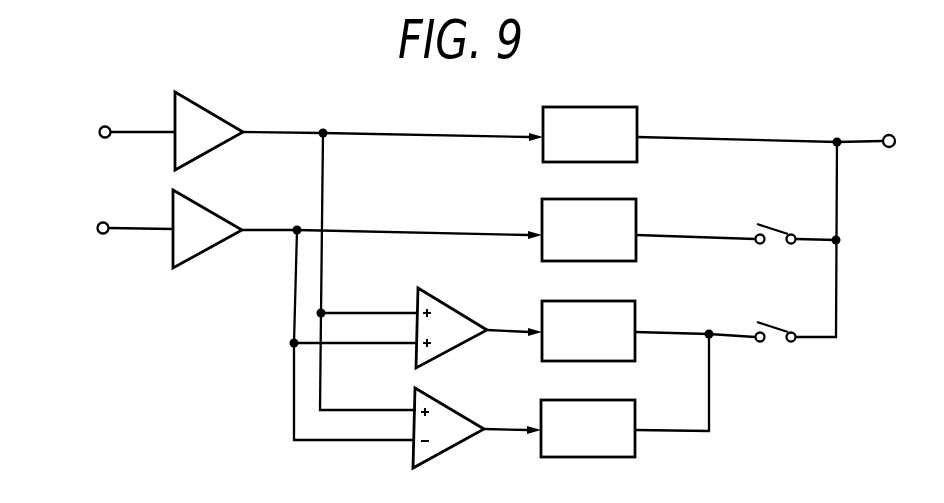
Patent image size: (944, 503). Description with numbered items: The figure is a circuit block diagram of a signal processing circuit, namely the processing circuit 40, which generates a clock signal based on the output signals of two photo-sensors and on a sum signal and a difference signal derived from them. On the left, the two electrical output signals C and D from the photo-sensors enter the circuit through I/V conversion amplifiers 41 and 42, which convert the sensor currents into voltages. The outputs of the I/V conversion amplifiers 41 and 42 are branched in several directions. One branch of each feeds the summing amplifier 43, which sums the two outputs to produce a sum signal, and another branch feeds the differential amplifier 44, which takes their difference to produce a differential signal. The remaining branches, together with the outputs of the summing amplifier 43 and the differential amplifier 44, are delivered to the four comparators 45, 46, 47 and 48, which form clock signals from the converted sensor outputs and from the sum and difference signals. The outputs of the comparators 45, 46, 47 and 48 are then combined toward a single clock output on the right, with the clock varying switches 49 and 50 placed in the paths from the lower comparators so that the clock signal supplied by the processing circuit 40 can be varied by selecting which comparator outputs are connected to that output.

The processing circuit 40 is at (96, 359).
The I/V conversion amplifier 41 is at (214, 93).
The I/V conversion amplifier 42 is at (213, 191).
The summing amplifier 43 is at (462, 307).
The differential amplifier 44 is at (453, 407).
The comparator 45 is at (639, 124).
The comparator 46 is at (638, 218).
The comparator 47 is at (637, 320).
The comparator 48 is at (635, 417).
The clock varying switch 49 is at (772, 228).
The clock varying switch 50 is at (772, 323).